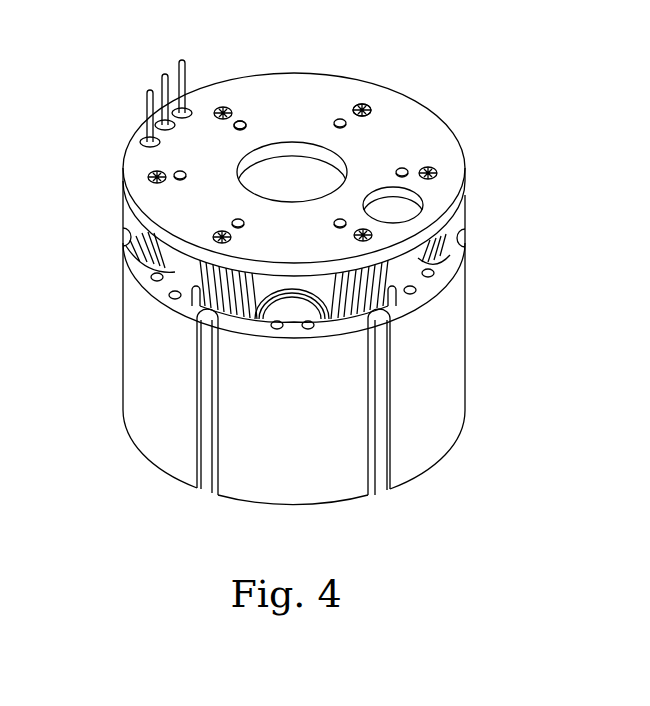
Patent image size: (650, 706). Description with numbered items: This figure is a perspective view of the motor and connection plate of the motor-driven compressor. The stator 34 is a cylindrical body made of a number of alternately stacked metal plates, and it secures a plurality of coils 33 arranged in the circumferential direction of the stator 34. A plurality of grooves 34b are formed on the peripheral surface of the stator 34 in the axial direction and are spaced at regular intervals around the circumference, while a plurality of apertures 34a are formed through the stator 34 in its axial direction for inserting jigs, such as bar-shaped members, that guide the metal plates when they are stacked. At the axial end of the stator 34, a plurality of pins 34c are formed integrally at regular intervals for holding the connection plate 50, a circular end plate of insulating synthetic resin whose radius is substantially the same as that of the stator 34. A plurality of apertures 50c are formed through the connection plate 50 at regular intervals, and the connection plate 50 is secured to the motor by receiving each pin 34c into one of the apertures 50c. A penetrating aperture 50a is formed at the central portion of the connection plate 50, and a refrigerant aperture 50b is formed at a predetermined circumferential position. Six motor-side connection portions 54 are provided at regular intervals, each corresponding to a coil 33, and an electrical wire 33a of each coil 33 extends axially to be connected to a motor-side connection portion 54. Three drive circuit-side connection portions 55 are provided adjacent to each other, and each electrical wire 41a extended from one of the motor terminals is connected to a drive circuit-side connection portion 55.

The connection plate 50 is at (296, 66).
The penetrating aperture 50a is at (288, 170).
The refrigerant aperture 50b is at (400, 213).
The apertures 50c is at (234, 130).
The motor-side connection portions 54 is at (367, 104).
The drive circuit-side connection portions 55 is at (140, 140).
The electrical wires 41a is at (160, 112).
The stator 34 is at (416, 452).
The apertures 34a is at (169, 295).
The grooves 34b is at (200, 468).
The pins 34c is at (240, 118).
The coils 33 is at (448, 262).
The electrical wire 33a is at (362, 103).